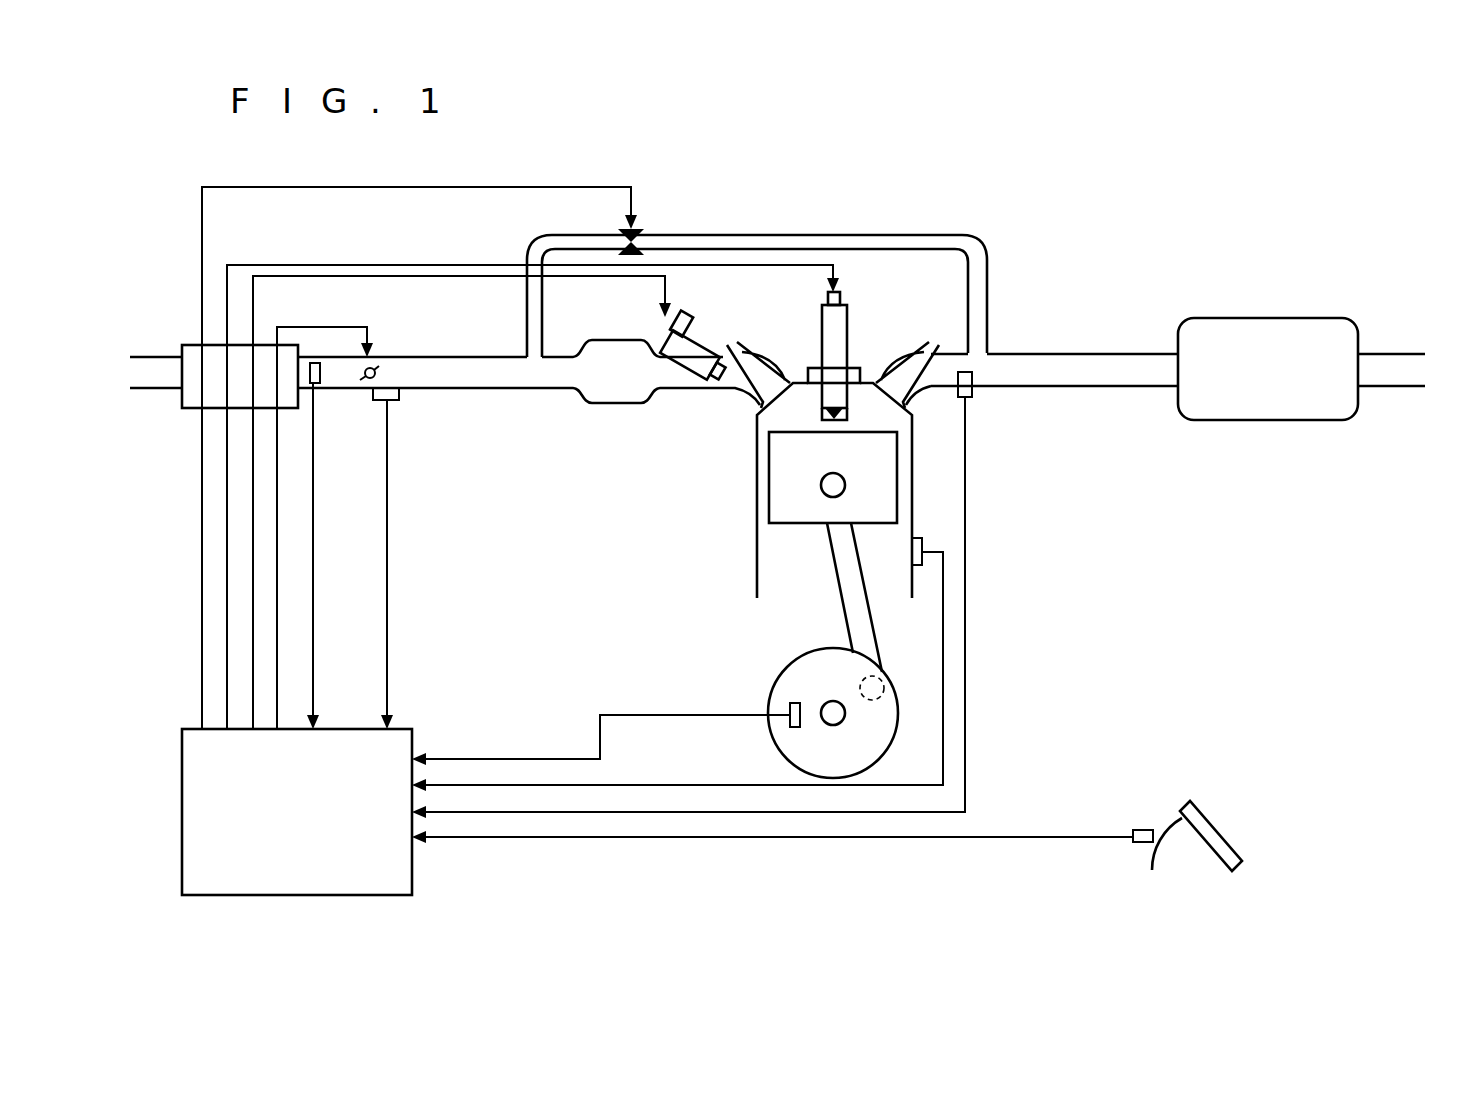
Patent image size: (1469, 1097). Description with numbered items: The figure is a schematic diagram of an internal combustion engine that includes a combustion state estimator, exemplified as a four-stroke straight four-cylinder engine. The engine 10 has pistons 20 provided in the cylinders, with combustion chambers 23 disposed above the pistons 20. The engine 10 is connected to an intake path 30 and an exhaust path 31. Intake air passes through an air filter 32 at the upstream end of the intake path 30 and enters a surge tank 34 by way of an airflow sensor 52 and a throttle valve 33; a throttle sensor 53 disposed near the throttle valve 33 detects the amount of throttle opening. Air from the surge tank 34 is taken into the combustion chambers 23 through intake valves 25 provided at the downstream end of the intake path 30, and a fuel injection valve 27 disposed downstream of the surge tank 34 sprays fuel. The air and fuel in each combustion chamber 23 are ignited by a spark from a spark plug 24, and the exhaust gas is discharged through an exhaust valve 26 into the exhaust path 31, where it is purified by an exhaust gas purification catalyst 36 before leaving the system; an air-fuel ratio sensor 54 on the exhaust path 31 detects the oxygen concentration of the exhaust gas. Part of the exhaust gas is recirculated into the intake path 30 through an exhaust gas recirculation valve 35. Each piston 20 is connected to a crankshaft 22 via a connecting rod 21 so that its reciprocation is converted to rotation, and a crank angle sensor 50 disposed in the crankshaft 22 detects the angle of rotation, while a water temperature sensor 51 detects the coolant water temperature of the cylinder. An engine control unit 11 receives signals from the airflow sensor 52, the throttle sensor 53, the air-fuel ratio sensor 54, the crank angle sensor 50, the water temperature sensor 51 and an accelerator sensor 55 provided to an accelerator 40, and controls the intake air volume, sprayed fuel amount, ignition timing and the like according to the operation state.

The engine 10 is at (757, 540).
The engine control unit (ECU) 11 is at (409, 727).
The piston 20 is at (768, 490).
The connecting rod 21 is at (838, 573).
The crankshaft 22 is at (802, 654).
The combustion chamber 23 is at (865, 392).
The spark plug 24 is at (843, 302).
The intake valve 25 is at (737, 346).
The exhaust valve 26 is at (928, 344).
The fuel injection valve 27 is at (687, 332).
The intake path 30 is at (462, 395).
The exhaust path 31 is at (1072, 354).
The air filter 32 is at (184, 340).
The throttle valve 33 is at (376, 365).
The surge tank 34 is at (580, 410).
The exhaust gas recirculation (EGR) valve 35 is at (638, 226).
The exhaust gas purification catalyst 36 is at (1200, 318).
The accelerator 40 is at (1226, 838).
The crank angle sensor 50 is at (789, 700).
The water temperature sensor 51 is at (920, 538).
The airflow sensor 52 is at (318, 392).
The throttle sensor 53 is at (400, 408).
The air-fuel ratio sensor 54 is at (970, 398).
The accelerator sensor 55 is at (1146, 845).